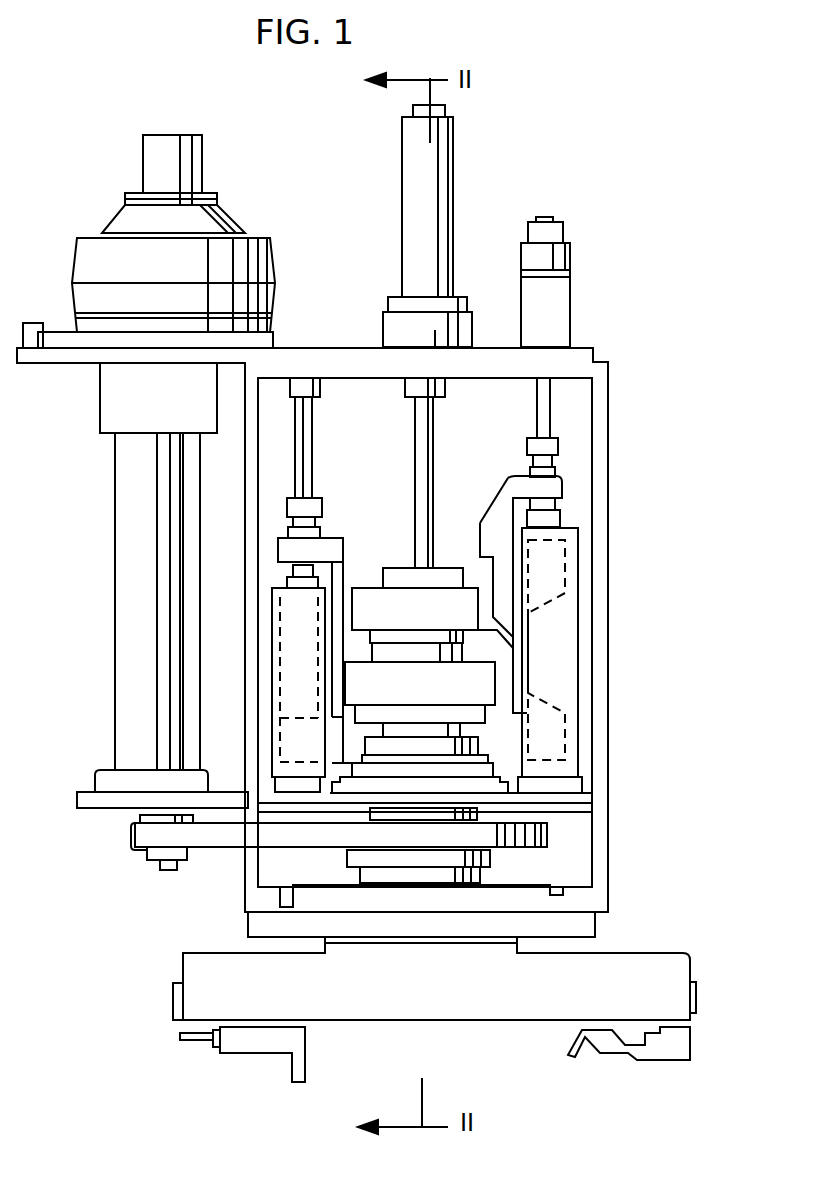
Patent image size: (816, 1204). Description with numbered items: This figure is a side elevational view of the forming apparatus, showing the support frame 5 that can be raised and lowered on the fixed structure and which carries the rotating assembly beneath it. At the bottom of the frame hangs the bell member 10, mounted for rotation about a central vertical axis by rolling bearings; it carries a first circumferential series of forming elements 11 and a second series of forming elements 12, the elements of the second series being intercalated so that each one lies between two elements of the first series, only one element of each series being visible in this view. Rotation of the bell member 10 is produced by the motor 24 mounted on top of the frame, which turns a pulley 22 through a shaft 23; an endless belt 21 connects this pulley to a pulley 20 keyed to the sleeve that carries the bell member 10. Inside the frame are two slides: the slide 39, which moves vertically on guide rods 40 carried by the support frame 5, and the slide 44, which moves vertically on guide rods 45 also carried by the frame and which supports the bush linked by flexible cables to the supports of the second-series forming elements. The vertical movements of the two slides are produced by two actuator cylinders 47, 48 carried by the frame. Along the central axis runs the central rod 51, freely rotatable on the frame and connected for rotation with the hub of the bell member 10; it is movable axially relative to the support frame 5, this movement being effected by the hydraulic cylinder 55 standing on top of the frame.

The support frame 5 is at (600, 514).
The bell member 10 is at (418, 995).
The forming element 11 is at (298, 1077).
The forming element 12 is at (578, 1045).
The pulley 20 is at (522, 858).
The endless belt 21 is at (228, 833).
The pulley 22 is at (148, 855).
The shaft 23 is at (165, 668).
The motor 24 is at (102, 258).
The slide 39 is at (340, 578).
The guide rods 40 is at (307, 438).
The slide 44 is at (490, 553).
The guide rods 45 is at (548, 402).
The actuator cylinder 47 is at (298, 628).
The actuator cylinder 48 is at (553, 646).
The central rod 51 is at (423, 415).
The hydraulic cylinder 55 is at (430, 152).